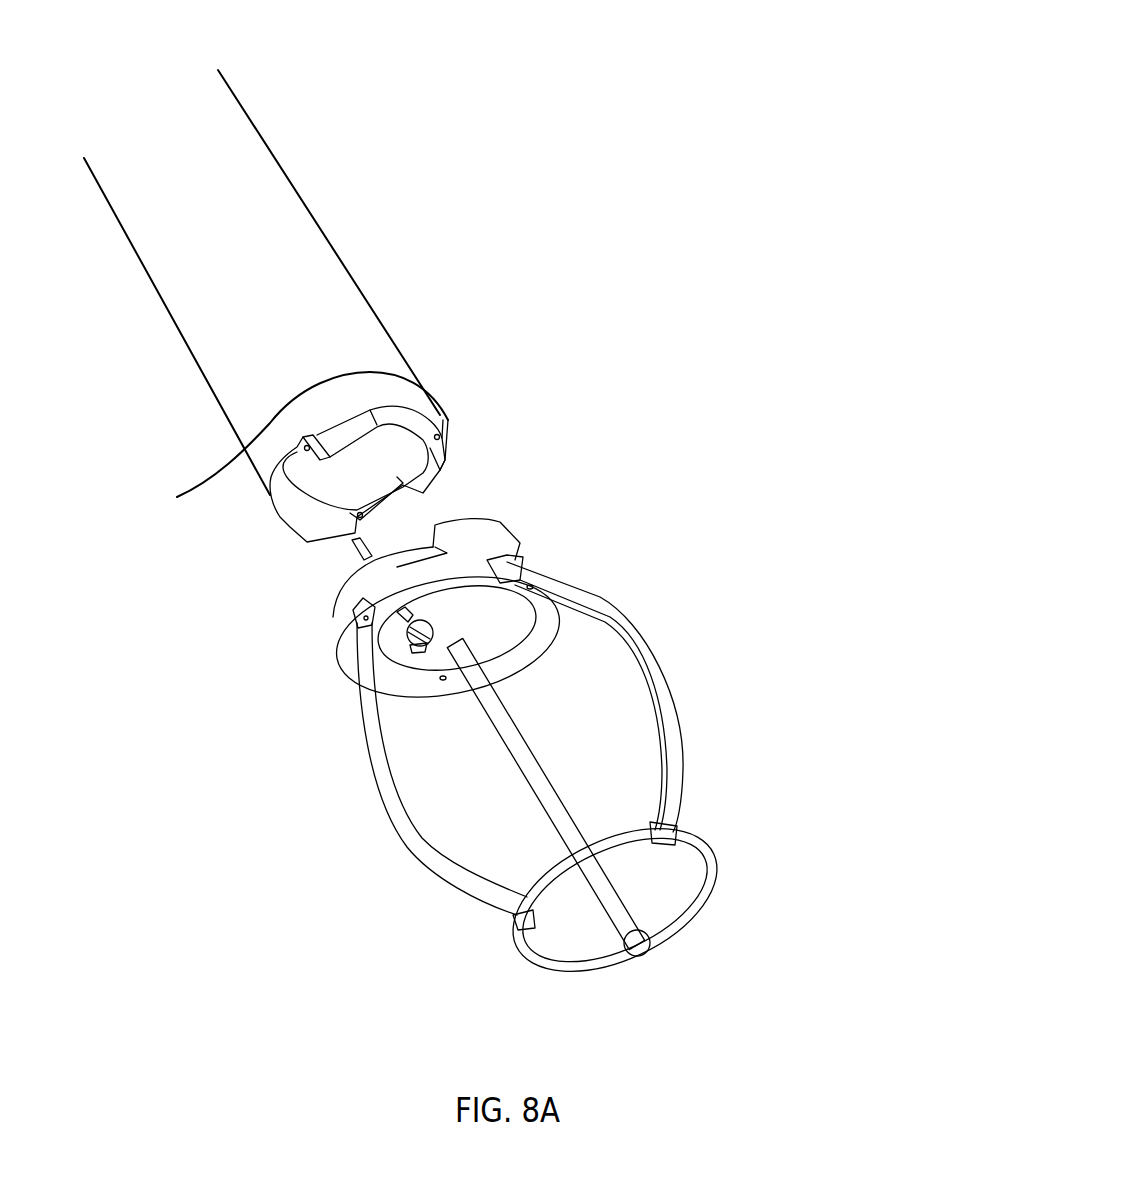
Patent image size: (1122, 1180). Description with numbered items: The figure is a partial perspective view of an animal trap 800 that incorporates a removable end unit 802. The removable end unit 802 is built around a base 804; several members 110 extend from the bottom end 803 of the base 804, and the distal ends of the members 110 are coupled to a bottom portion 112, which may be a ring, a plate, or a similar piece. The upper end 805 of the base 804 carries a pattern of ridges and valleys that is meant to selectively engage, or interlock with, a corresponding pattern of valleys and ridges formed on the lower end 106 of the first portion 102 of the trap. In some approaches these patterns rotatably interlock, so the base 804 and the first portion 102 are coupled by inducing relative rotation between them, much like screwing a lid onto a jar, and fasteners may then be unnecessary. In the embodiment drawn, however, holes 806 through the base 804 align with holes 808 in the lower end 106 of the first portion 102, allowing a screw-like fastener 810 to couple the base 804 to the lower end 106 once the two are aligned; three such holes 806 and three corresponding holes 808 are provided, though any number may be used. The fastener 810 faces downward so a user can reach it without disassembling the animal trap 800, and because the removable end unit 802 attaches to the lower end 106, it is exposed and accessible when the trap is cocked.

The animal trap 800 is at (822, 88).
The first portion 102 is at (290, 318).
The lower end of the first portion 106 is at (474, 431).
The holes in the lower end of the first portion 808 is at (440, 412).
The upper end of the base 805 is at (455, 497).
The base 804 is at (515, 533).
The removable end unit 802 is at (750, 572).
The holes through the base 806 is at (530, 587).
The bottom end of the base 803 is at (433, 712).
The fastener 810 is at (360, 545).
The members 110 is at (440, 870).
The bottom portion 112 is at (715, 880).